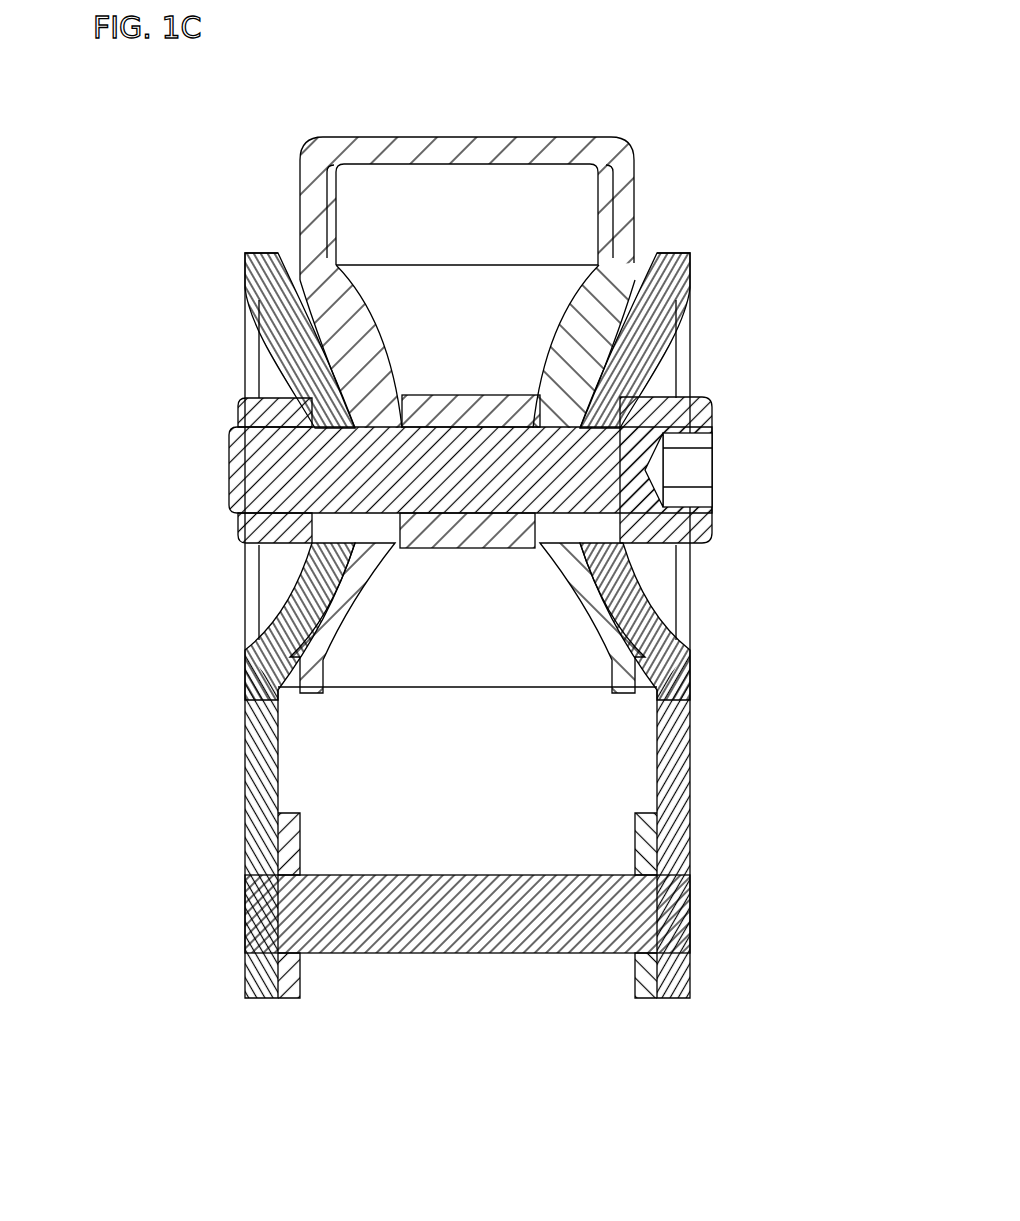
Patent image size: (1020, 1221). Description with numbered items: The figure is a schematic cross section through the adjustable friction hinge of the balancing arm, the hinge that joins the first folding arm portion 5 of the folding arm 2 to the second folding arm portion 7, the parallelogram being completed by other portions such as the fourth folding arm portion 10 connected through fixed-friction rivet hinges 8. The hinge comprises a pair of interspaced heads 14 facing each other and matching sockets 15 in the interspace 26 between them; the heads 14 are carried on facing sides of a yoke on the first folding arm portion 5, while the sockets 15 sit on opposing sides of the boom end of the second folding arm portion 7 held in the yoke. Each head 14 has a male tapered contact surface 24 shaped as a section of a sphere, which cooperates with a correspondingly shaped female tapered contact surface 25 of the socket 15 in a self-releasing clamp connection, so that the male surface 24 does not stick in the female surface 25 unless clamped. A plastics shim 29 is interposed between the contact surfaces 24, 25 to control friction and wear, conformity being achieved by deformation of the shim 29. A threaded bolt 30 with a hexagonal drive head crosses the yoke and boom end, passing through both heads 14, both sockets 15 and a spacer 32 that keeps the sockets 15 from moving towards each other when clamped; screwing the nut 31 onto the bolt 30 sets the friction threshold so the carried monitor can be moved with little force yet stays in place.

The folding arm 2 is at (200, 1017).
The first folding arm portion 5 is at (245, 762).
The second folding arm portion 7 is at (621, 215).
The further friction hinge 8 is at (262, 913).
The fourth folding arm portion 10 is at (290, 848).
The head 14 is at (357, 327).
The socket 15 is at (327, 288).
The male tapered contact surface 24 is at (607, 345).
The female tapered contact surface 25 is at (348, 350).
The interspace 26 is at (467, 712).
The shim 29 is at (330, 618).
The threaded bolt 30 is at (250, 470).
The nut 31 is at (250, 537).
The spacer 32 is at (413, 523).